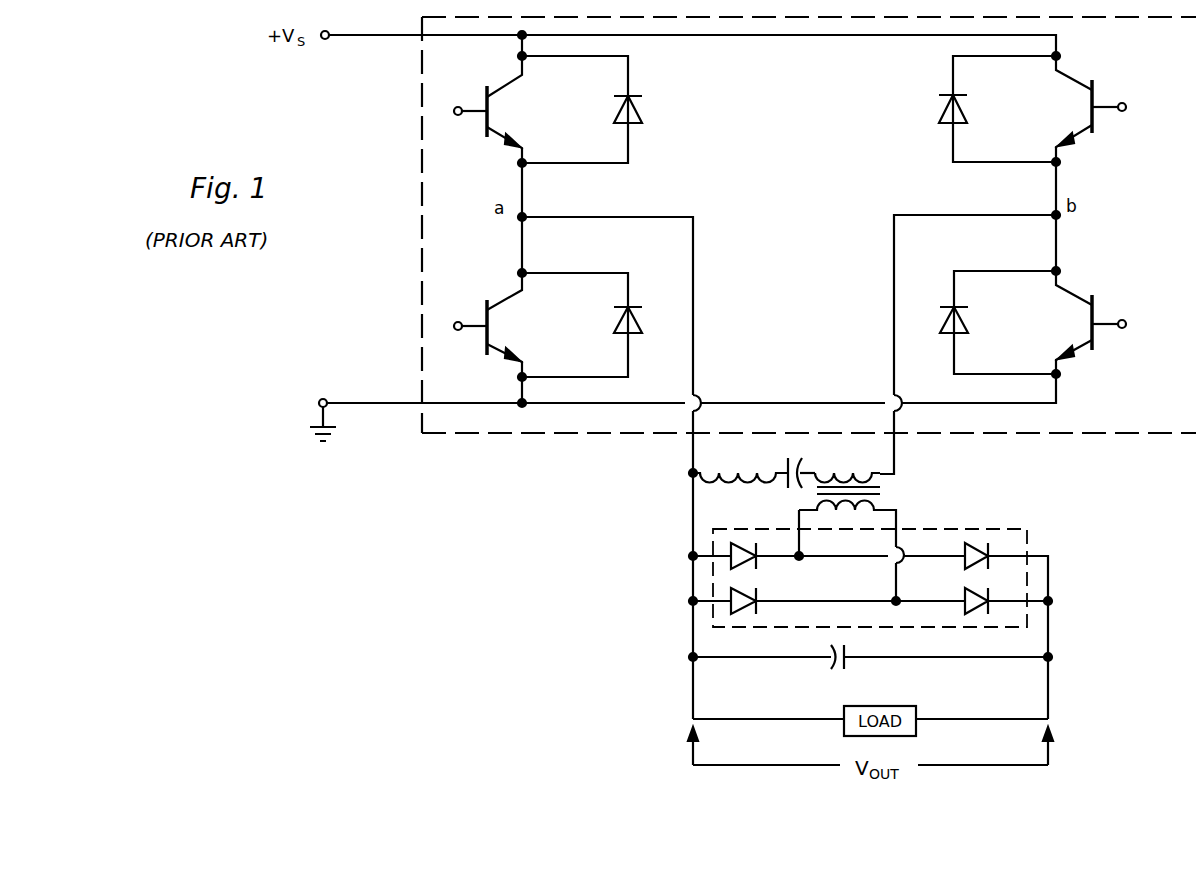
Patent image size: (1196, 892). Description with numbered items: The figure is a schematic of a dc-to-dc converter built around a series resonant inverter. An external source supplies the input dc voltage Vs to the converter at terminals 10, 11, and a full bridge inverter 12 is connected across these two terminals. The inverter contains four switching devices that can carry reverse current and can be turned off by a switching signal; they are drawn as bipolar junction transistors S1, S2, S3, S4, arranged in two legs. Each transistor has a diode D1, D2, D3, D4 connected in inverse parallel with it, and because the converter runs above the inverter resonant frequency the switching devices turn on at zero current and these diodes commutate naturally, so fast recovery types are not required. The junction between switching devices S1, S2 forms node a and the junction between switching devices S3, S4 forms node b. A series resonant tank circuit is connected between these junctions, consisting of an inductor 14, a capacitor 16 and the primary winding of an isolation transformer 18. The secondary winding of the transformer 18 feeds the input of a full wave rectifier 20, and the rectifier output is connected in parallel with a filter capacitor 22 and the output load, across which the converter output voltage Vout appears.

The terminal 10 is at (330, 40).
The terminal 11 is at (326, 400).
The full bridge inverter 12 is at (1097, 433).
The inductor 14 is at (735, 478).
The capacitor 16 is at (789, 465).
The isolation transformer 18 is at (882, 492).
The full wave rectifier 20 is at (1005, 528).
The filter capacitor 22 is at (847, 665).
The switching device S1 is at (513, 82).
The switching device S2 is at (512, 297).
The switching device S3 is at (1068, 78).
The switching device S4 is at (1068, 295).
The diode D1 is at (640, 118).
The diode D2 is at (638, 333).
The diode D3 is at (940, 112).
The diode D4 is at (940, 333).